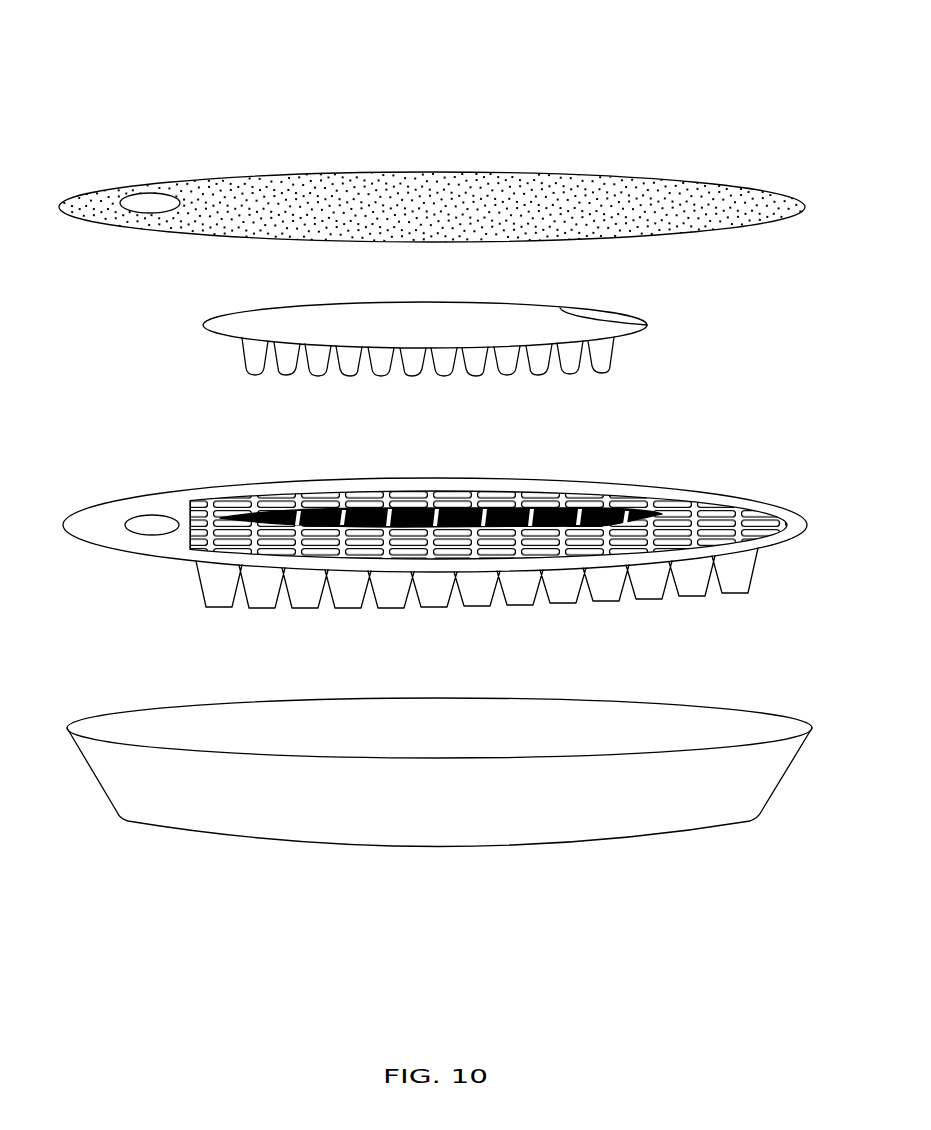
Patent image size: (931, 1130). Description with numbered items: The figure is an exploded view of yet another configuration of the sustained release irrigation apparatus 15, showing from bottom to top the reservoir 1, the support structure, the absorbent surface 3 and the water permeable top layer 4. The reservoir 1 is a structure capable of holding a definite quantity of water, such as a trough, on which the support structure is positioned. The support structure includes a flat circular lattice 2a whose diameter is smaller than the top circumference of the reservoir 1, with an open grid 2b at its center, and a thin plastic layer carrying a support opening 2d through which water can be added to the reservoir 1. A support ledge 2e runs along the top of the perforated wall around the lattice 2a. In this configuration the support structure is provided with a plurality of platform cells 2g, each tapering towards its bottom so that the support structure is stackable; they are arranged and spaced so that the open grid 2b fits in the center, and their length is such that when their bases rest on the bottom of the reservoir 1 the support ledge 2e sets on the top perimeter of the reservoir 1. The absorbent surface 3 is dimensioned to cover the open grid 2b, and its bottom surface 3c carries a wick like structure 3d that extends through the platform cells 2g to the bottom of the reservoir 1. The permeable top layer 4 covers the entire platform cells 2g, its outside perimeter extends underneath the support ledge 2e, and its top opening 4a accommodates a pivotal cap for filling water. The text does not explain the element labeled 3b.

The sustained release irrigation apparatus 15 is at (477, 87).
The water permeable top layer 4 is at (517, 172).
The top opening 4a is at (150, 198).
The absorbent surface 3 is at (518, 302).
The tray top surface 3b is at (610, 328).
The bottom surface 3c is at (222, 345).
The wick like structure 3d is at (614, 348).
The flat circular lattice 2a is at (715, 523).
The open grid 2b is at (312, 510).
The support opening 2d is at (152, 520).
The support ledge 2e is at (520, 490).
The platform cells 2g is at (755, 570).
The reservoir 1 is at (620, 826).